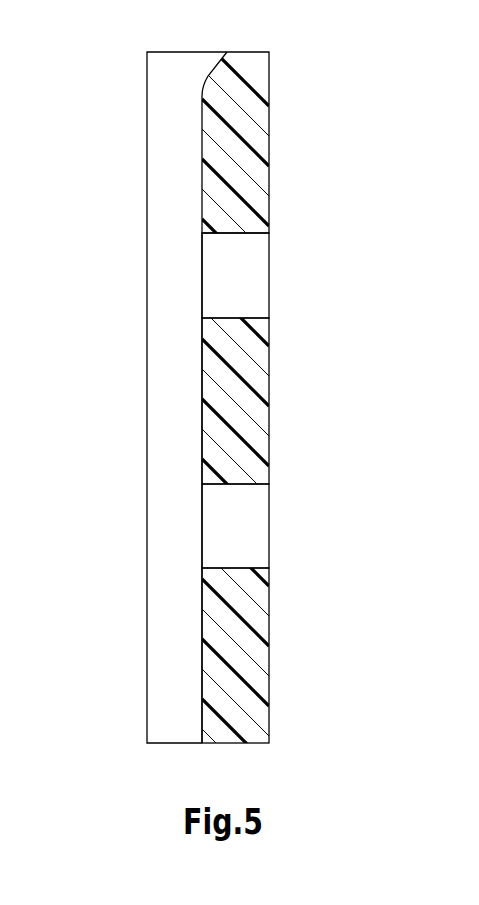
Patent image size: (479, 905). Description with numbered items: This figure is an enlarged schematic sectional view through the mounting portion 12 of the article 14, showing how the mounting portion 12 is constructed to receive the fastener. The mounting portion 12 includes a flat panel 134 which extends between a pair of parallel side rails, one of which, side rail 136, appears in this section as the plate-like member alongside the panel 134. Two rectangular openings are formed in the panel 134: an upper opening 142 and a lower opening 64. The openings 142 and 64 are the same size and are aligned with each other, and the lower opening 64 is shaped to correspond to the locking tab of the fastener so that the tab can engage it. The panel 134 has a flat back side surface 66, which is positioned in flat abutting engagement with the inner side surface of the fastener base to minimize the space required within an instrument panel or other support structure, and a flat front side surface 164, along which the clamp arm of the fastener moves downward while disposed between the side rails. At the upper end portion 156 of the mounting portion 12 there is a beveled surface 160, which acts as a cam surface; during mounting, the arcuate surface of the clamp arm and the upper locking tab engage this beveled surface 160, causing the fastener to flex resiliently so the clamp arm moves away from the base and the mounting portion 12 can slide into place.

The mounting portion 12 is at (385, 202).
The article 14 is at (390, 252).
The lower opening 64 is at (245, 518).
The back side surface 66 is at (270, 672).
The flat panel 134 is at (245, 165).
The side rail 136 is at (172, 281).
The upper opening 142 is at (237, 283).
The upper end portion 156 is at (224, 108).
The beveled surface 160 is at (218, 72).
The front side surface 164 is at (203, 680).